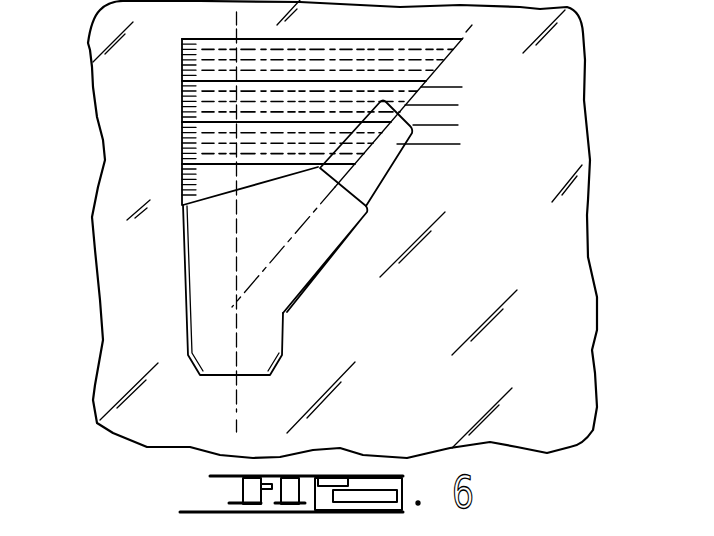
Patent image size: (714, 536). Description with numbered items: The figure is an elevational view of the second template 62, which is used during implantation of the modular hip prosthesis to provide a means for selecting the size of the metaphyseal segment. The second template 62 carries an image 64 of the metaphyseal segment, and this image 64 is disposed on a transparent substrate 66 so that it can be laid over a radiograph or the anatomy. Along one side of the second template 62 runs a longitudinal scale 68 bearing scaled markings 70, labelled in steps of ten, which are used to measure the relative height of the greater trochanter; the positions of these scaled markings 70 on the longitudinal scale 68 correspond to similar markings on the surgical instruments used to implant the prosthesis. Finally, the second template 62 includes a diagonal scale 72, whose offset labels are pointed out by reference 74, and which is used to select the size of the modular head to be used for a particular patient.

The second template 62 is at (600, 180).
The image of the metaphyseal segment 64 is at (272, 295).
The transparent substrate 66 is at (523, 257).
The longitudinal scale 68 is at (174, 93).
The scaled markings 70 is at (182, 137).
The diagonal scale 72 is at (548, 107).
The indicator lines 74 is at (535, 88).